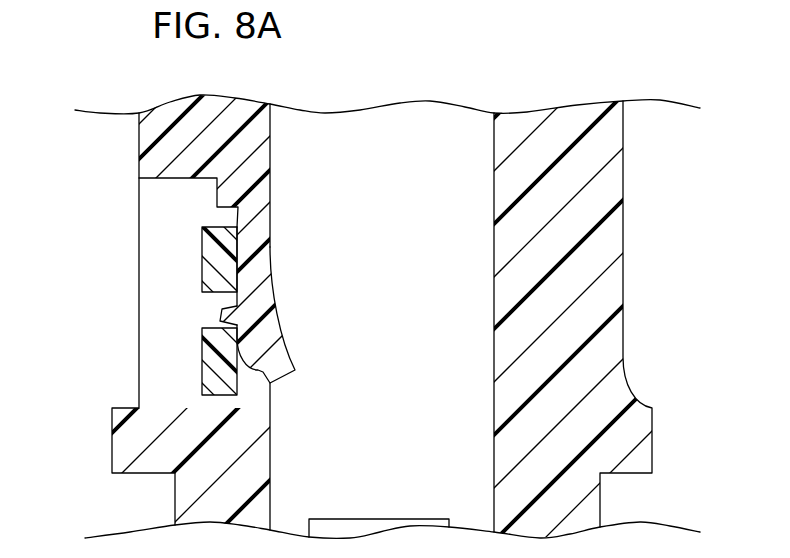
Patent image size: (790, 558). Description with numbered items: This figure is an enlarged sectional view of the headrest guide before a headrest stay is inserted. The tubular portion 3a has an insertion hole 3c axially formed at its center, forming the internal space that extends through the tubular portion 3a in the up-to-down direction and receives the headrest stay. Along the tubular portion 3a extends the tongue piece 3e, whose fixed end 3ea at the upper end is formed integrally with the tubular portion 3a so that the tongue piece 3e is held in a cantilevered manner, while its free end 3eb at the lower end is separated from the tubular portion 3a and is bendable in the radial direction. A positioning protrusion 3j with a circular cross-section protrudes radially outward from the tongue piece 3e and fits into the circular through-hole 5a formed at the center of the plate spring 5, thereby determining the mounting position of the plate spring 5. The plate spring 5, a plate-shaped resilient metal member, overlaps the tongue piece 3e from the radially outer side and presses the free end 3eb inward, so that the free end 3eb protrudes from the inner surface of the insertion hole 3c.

The tubular portion 3a is at (612, 238).
The insertion hole 3c is at (492, 148).
The tongue piece 3e is at (326, 300).
The fixed end 3ea is at (263, 222).
The free end 3eb is at (275, 355).
The positioning protrusion 3j is at (222, 321).
The plate spring 5 is at (207, 357).
The through-hole 5a is at (207, 302).